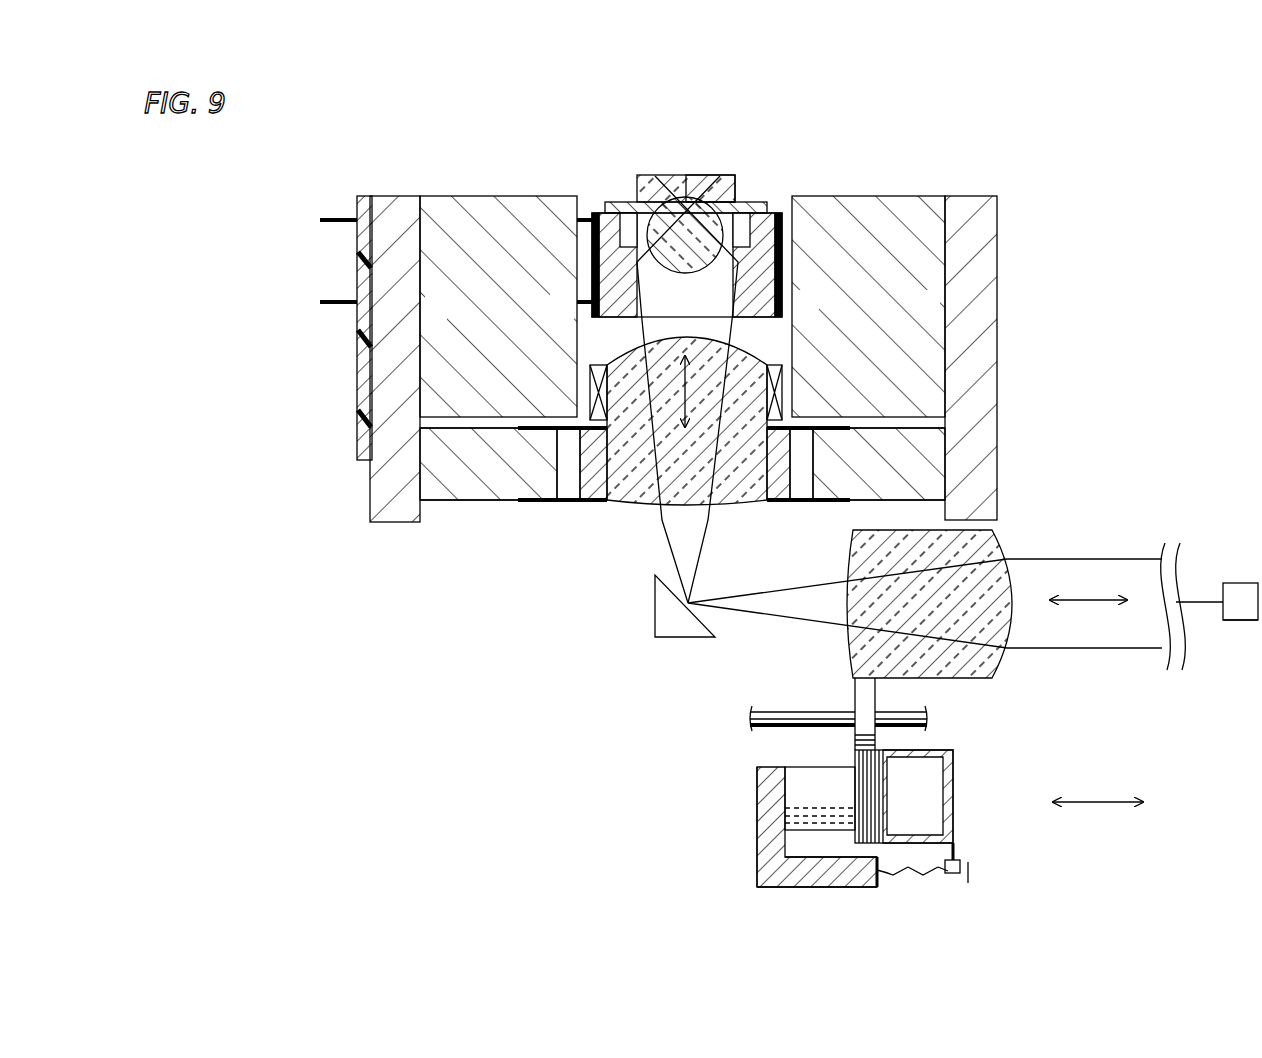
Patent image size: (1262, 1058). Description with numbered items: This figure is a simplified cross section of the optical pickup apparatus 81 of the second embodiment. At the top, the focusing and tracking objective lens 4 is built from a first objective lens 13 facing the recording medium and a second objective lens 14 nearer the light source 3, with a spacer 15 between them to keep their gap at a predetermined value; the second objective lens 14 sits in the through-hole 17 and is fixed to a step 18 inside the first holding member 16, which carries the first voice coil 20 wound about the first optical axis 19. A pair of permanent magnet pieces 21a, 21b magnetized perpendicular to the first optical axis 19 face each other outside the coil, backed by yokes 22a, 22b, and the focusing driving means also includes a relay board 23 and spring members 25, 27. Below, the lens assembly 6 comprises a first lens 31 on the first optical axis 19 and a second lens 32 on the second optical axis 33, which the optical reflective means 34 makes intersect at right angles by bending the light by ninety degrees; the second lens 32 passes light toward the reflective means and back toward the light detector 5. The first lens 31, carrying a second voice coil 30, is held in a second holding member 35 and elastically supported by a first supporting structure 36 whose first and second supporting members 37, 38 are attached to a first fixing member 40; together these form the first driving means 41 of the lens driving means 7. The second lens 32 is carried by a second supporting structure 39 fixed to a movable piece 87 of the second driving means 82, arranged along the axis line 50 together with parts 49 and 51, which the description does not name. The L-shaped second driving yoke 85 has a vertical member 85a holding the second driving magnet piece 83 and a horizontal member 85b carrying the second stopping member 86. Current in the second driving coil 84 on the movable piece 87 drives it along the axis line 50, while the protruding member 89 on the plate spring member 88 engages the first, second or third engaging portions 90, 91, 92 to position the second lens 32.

The light source 3 is at (1240, 583).
The focusing and tracking objective lens 4 is at (701, 145).
The light detector 5 is at (1243, 620).
The lens assembly 6 is at (809, 507).
The lens driving means 7 is at (403, 655).
The first objective lens 13 is at (715, 190).
The second objective lens 14 is at (685, 126).
The spacer 15 is at (622, 205).
The first holding member 16 is at (600, 215).
The through-hole 17 is at (640, 330).
The step 18 is at (728, 287).
The first optical axis 19 is at (640, 505).
The first voice coil 20 is at (790, 213).
The permanent magnet piece 21a is at (440, 237).
The permanent magnet piece 21b is at (925, 268).
The yoke 22a is at (388, 432).
The yoke 22b is at (975, 427).
The relay board 23 is at (365, 356).
The second spring member 25 is at (328, 217).
The fourth spring member 27 is at (320, 301).
The second voice coil 30 is at (771, 365).
The first lens 31 is at (743, 482).
The second lens 32 is at (863, 553).
The second optical axis 33 is at (1080, 603).
The optical reflective means 34 is at (682, 626).
The second holding member 35 is at (590, 505).
The first supporting structure 36 is at (513, 516).
The first supporting member 37 is at (513, 437).
The second supporting member 38 is at (452, 560).
The second supporting structure 39 is at (878, 698).
The first fixing member 40 is at (447, 483).
The first driving means 41 is at (475, 610).
The guide shaft 49 is at (927, 720).
The axis line 50 is at (1097, 805).
The bearing 51 is at (855, 737).
The optical pickup apparatus 81 is at (942, 150).
The second driving means 82 is at (656, 823).
The second driving magnet piece 83 is at (783, 815).
The second driving coil 84 is at (768, 880).
The second driving yoke 85 is at (767, 848).
The vertical member 85a is at (758, 780).
The horizontal member 85b is at (823, 888).
The second stopping member 86 is at (968, 880).
The movable piece 87 is at (953, 780).
The plate spring member 88 is at (957, 840).
The protruding member 89 is at (960, 860).
The first engaging portion 90 is at (950, 878).
The second engaging portion 91 is at (921, 878).
The third engaging portion 92 is at (893, 878).